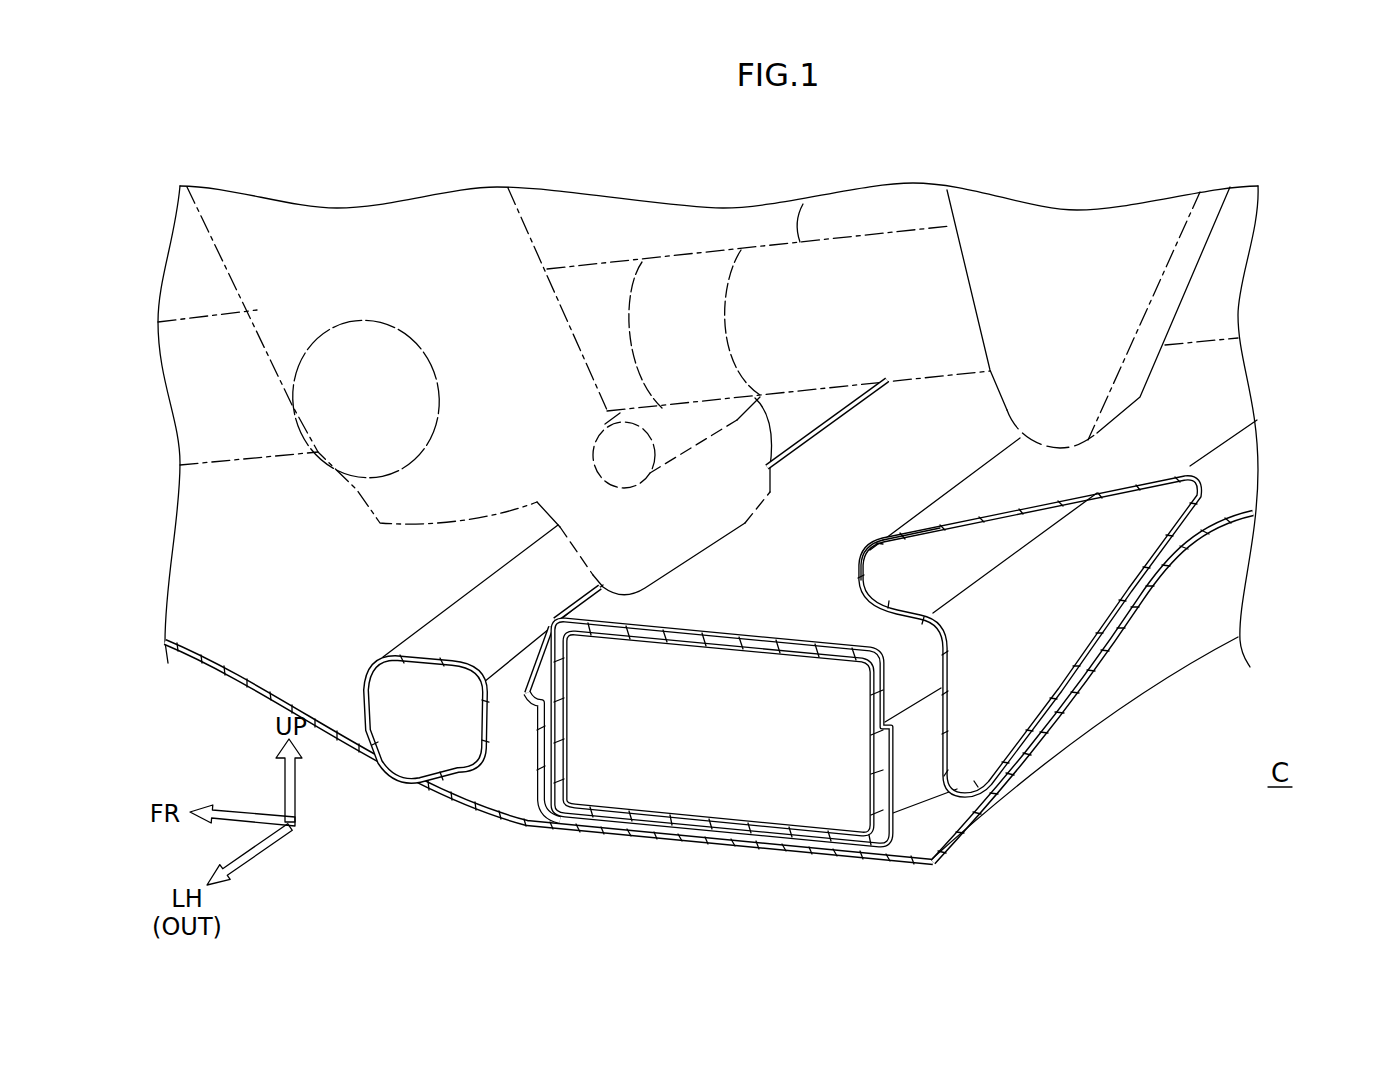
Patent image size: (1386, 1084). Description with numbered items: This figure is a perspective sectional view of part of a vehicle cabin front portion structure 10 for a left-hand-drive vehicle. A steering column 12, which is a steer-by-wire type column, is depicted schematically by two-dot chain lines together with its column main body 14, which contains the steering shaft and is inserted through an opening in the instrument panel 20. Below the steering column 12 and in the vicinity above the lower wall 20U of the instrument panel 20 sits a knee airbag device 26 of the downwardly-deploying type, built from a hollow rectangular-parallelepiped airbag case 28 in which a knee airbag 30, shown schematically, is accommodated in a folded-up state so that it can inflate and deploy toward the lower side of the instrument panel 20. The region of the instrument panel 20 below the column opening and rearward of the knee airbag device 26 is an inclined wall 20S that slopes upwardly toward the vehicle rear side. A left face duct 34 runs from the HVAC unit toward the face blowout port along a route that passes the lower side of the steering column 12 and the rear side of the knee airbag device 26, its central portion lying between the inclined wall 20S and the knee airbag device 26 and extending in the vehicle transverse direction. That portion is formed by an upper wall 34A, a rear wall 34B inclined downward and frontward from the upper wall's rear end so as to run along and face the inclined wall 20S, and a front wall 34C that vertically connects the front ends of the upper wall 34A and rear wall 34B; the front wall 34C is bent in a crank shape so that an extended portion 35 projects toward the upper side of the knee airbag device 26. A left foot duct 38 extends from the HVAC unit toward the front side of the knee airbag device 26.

The vehicle cabin front portion structure 10 is at (1129, 819).
The steering column 12 is at (620, 242).
The column main body 14 is at (806, 200).
The instrument panel 20 is at (1171, 668).
The inclined wall 20S is at (1120, 703).
The lower wall 20U is at (677, 840).
The knee airbag device 26 is at (531, 791).
The airbag case 28 is at (755, 607).
The knee airbag 30 is at (762, 808).
The left face duct 34 is at (1225, 398).
The upper wall 34A is at (1061, 467).
The rear wall 34B is at (1140, 578).
The front wall 34C is at (967, 667).
The extended portion 35 is at (910, 530).
The left foot duct 38 is at (432, 635).